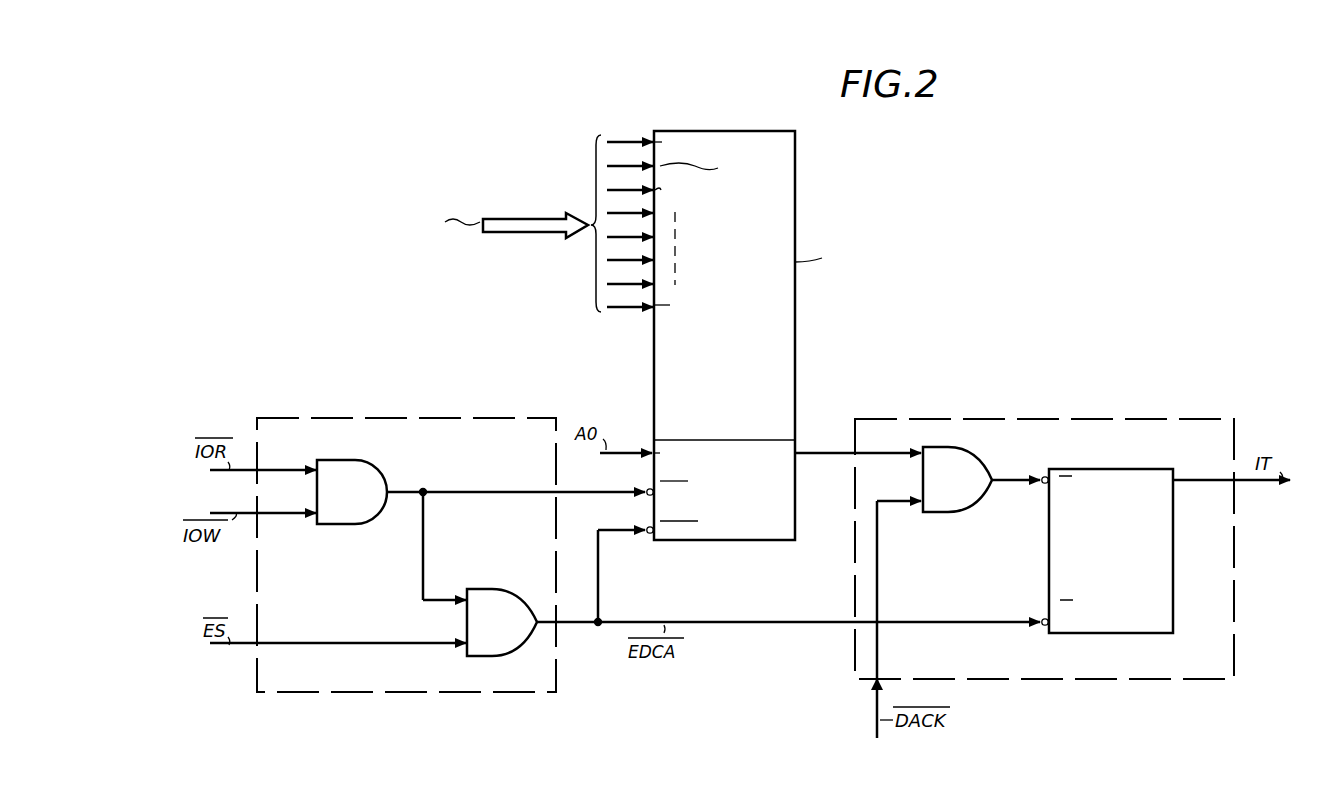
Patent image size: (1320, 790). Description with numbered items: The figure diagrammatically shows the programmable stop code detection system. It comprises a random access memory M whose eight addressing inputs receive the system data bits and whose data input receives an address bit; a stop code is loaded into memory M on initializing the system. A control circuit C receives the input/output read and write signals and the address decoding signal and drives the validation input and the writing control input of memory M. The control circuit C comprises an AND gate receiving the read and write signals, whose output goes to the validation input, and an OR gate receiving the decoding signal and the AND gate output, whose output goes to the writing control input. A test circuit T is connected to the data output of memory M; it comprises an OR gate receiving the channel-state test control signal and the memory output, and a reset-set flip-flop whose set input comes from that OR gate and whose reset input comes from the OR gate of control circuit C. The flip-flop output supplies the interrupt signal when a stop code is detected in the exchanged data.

The random access memory M is at (721, 378).
The control circuit C is at (410, 418).
The test circuit T is at (1078, 418).